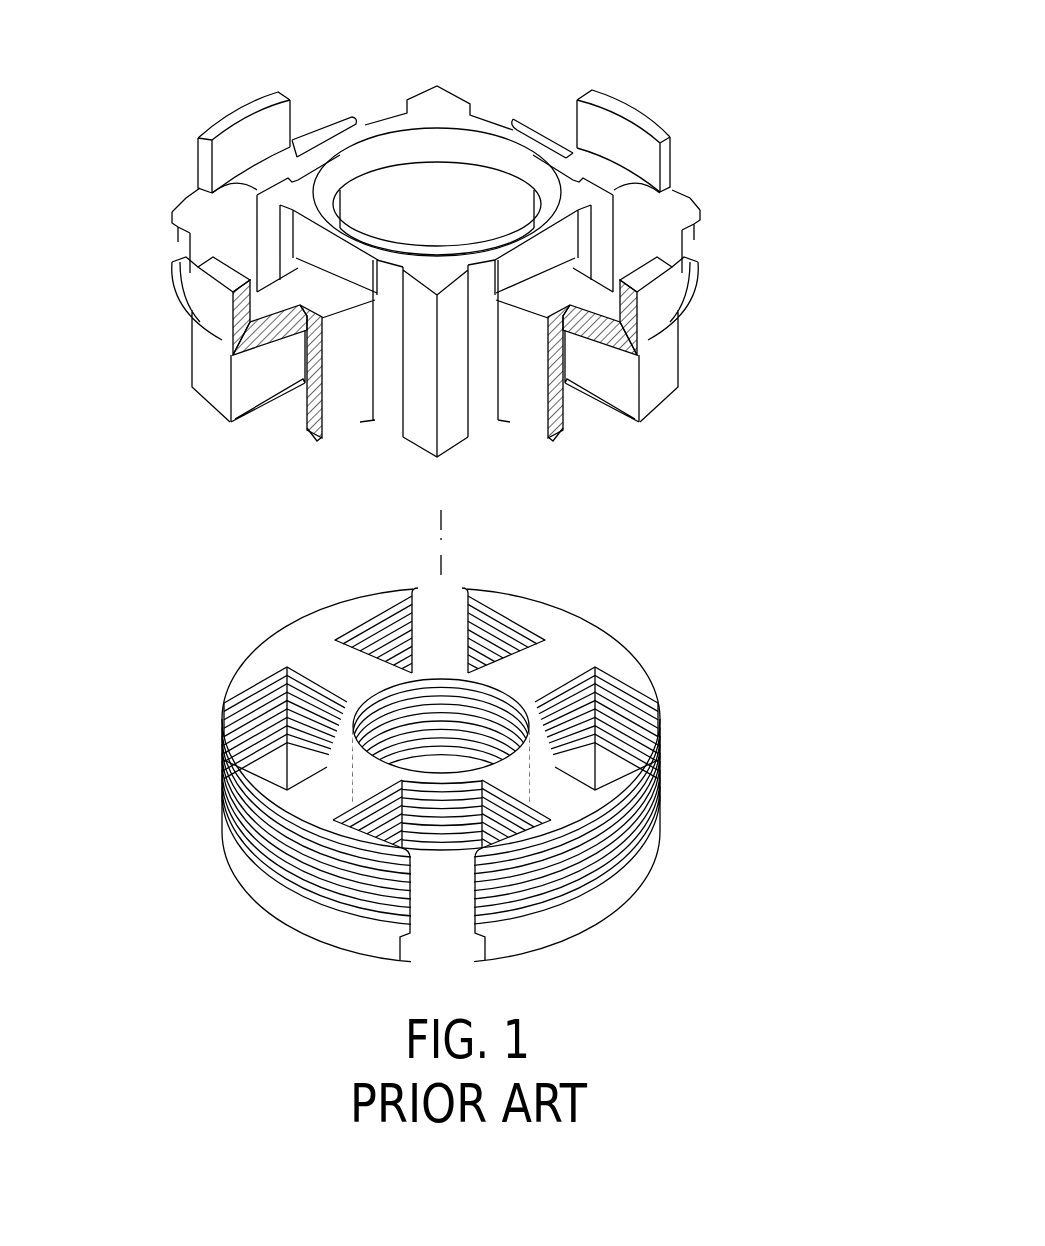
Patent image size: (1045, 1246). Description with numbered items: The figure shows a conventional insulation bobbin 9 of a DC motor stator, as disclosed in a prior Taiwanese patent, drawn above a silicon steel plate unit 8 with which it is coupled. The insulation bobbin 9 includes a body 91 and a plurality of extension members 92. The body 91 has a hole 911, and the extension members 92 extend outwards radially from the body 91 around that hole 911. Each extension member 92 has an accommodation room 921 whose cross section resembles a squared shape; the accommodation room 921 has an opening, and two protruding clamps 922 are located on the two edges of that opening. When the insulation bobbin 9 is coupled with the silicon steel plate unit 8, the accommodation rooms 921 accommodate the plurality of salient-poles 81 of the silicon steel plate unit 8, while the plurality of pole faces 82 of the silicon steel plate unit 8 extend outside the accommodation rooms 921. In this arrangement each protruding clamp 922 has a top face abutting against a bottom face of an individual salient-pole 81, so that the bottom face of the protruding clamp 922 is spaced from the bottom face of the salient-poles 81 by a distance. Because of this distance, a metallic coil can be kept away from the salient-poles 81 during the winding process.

The insulation bobbin 9 is at (668, 76).
The body 91 is at (440, 98).
The hole 911 is at (397, 125).
The extension member 92 is at (188, 212).
The accommodation room 921 is at (261, 447).
The protruding clamp 922 is at (240, 416).
The silicon steel plate unit 8 is at (644, 630).
The salient-pole 81 is at (560, 785).
The pole face 82 is at (592, 868).